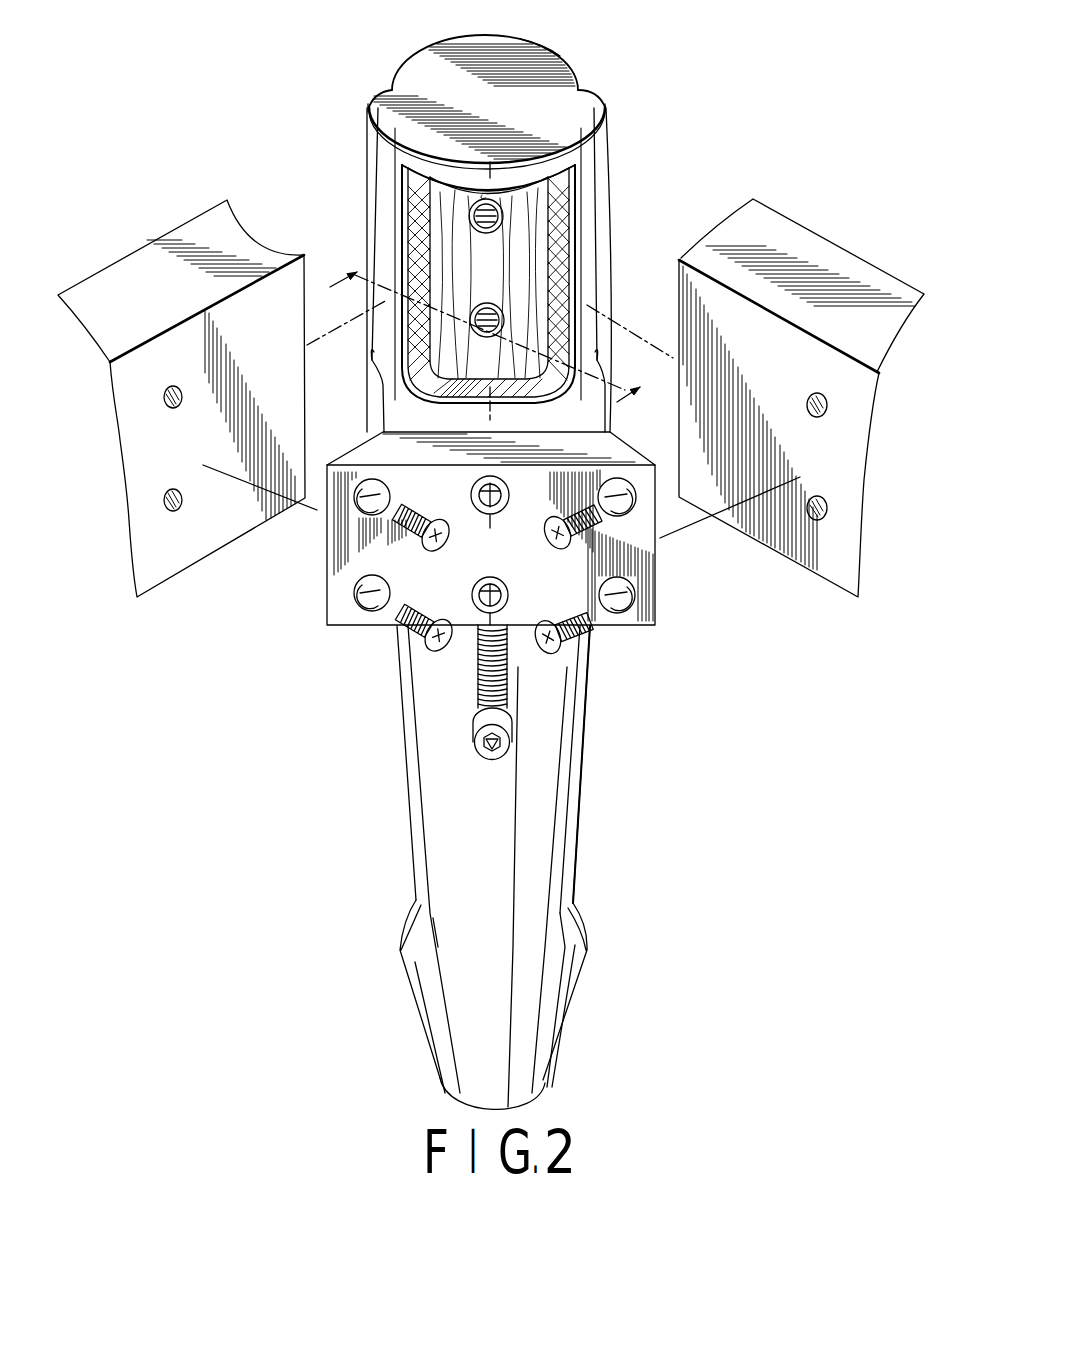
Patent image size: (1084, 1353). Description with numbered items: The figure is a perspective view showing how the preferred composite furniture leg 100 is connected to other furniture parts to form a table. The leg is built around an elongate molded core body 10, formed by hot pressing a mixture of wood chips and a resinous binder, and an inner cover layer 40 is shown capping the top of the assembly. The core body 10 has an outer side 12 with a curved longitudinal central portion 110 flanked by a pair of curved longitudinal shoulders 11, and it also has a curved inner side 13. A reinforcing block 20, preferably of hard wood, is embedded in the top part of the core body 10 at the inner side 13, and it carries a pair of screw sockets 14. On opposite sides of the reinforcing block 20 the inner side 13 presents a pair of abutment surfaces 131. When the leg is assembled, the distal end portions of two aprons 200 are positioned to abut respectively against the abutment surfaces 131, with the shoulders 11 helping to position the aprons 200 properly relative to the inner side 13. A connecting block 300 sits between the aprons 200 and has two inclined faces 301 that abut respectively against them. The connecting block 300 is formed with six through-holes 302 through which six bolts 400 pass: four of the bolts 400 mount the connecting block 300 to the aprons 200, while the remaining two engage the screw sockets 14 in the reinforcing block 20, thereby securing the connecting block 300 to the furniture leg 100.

The molded core body 10 is at (497, 98).
The curved longitudinal shoulders 11 is at (370, 106).
The outer side 12 is at (545, 46).
The curved inner side 13 is at (490, 270).
The screw sockets 14 is at (470, 315).
The reinforcing block 20 is at (446, 292).
The inner cover layer 40 is at (582, 137).
The composite furniture leg 100 is at (405, 803).
The curved longitudinal central portion 110 is at (413, 68).
The abutment surfaces 131 is at (374, 177).
The aprons 200 is at (209, 217).
The connecting block 300 is at (474, 504).
The inclined faces 301 is at (350, 452).
The through-holes 302 is at (355, 594).
The bolts 400 is at (478, 694).